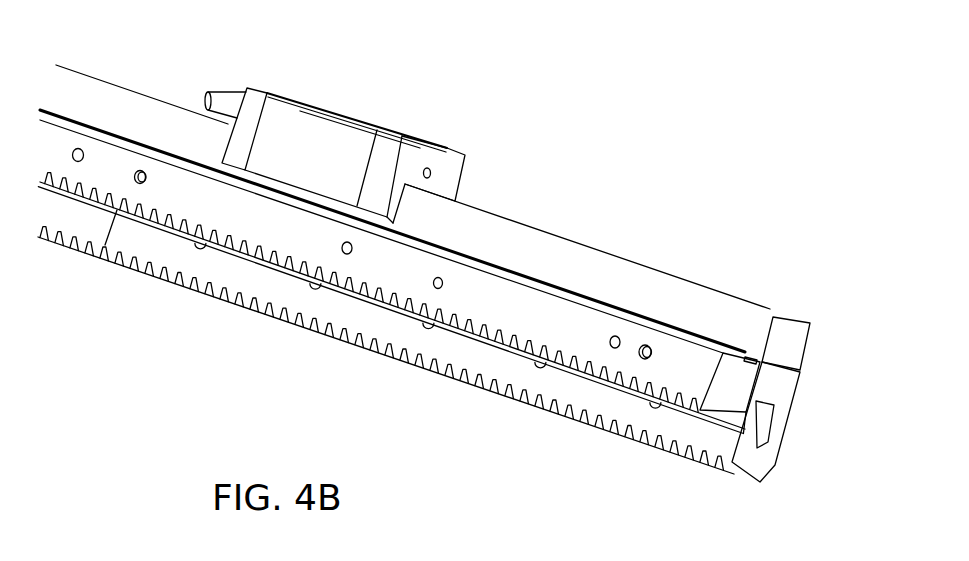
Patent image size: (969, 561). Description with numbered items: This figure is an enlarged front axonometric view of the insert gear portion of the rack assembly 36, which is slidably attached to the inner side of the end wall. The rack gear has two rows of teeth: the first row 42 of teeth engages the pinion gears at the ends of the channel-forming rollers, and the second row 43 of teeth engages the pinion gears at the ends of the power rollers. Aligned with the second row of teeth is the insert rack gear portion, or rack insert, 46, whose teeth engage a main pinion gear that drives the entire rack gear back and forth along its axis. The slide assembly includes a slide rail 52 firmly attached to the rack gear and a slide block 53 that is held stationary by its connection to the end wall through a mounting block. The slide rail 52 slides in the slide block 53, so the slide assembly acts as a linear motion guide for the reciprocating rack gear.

The rack assembly 36 is at (616, 84).
The first row of teeth 42 is at (203, 208).
The second row of teeth 43 is at (776, 440).
The insert rack gear portion 46 is at (613, 412).
The slide rail 52 is at (558, 253).
The slide block 53 is at (335, 137).